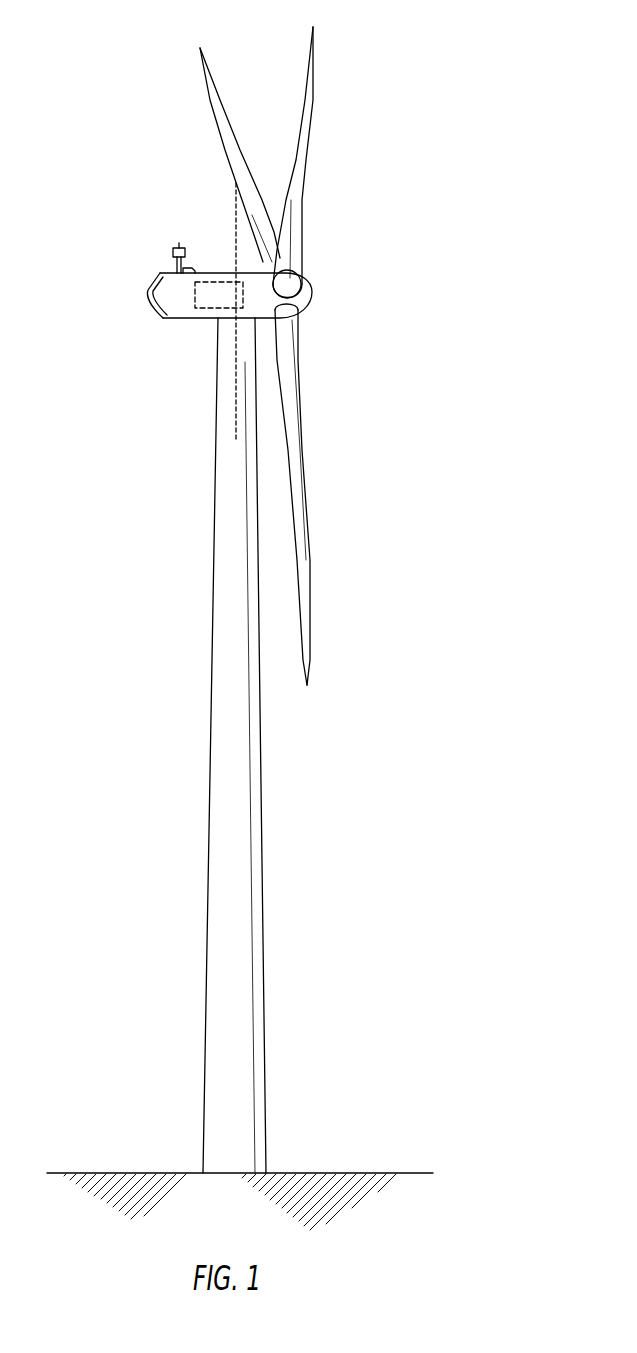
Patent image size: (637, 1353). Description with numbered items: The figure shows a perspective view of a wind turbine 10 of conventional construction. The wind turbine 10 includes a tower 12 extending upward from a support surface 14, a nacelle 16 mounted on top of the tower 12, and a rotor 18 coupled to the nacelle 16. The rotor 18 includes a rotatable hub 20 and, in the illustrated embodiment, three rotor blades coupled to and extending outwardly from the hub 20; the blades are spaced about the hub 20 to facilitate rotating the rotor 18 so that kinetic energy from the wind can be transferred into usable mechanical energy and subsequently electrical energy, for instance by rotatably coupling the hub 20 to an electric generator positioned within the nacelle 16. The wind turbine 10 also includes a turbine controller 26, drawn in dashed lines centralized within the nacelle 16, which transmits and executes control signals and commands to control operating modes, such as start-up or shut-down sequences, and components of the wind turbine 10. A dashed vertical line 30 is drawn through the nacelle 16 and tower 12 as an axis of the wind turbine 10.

The wind turbine 10 is at (408, 112).
The tower 12 is at (219, 860).
The support surface 14 is at (125, 1172).
The nacelle 16 is at (192, 320).
The rotor 18 is at (316, 272).
The rotatable hub 20 is at (312, 300).
The turbine controller 26 is at (218, 282).
The yaw axis 30 is at (236, 196).